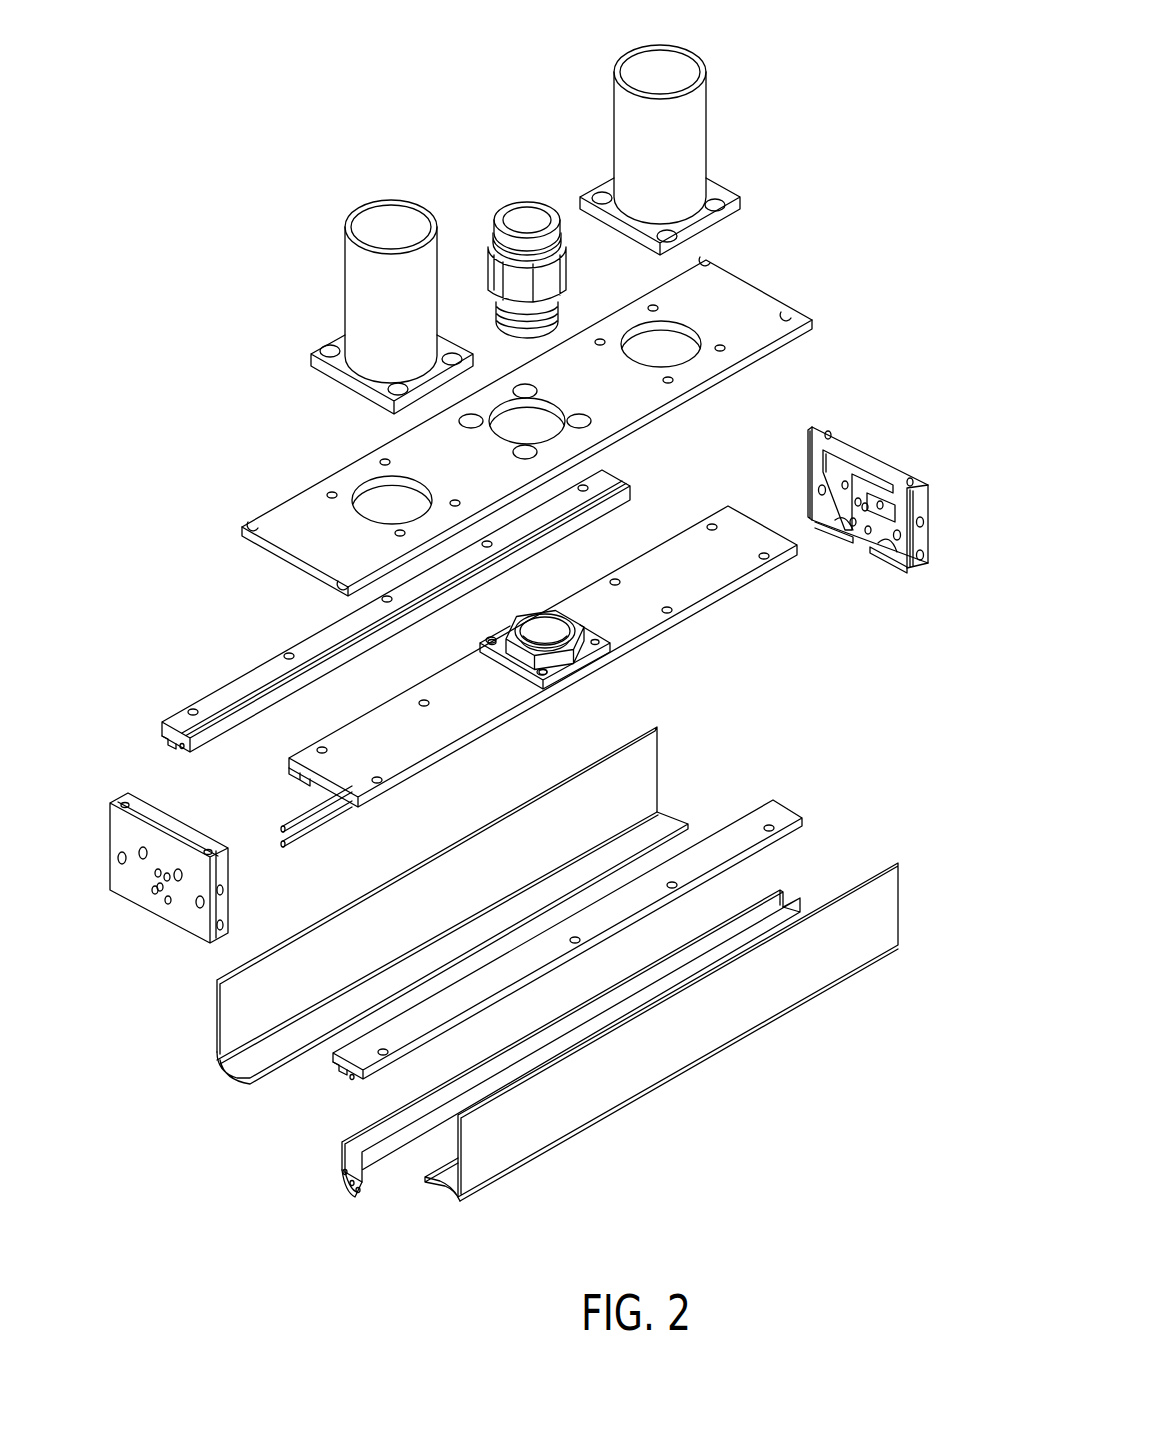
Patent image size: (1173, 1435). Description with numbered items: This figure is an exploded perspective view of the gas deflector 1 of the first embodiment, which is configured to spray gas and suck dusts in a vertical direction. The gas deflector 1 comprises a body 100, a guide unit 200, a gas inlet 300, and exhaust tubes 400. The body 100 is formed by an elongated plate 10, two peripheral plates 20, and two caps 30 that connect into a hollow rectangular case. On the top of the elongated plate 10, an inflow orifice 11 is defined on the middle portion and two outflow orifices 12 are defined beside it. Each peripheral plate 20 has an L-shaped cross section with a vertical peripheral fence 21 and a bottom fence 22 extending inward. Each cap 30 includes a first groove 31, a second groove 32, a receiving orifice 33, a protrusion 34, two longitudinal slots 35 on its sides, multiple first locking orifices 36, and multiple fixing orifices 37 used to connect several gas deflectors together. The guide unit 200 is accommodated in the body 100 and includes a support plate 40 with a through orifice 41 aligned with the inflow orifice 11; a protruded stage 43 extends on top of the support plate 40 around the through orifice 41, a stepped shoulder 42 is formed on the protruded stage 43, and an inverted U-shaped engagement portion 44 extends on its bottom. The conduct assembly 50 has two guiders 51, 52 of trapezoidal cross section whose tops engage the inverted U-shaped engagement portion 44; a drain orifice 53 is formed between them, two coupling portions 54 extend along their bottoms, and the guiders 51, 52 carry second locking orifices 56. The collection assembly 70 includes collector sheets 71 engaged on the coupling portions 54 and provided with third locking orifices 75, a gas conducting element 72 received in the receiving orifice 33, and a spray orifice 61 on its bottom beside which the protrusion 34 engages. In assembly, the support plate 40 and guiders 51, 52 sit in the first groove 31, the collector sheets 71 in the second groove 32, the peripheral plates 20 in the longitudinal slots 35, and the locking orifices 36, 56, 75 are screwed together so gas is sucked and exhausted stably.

The gas deflector 1 is at (231, 228).
The body 100 is at (244, 492).
The guide unit 200 is at (878, 790).
The gas inlet 300 is at (523, 198).
The exhaust tube 400 is at (405, 203).
The elongated plate 10 is at (769, 278).
The inflow orifice 11 is at (533, 425).
The outflow orifice 12 is at (652, 345).
The peripheral plate 20 is at (658, 782).
The vertical peripheral fence 21 is at (215, 1022).
The bottom fence 22 is at (240, 1078).
The cap 30 is at (937, 480).
The first groove 31 is at (833, 460).
The second groove 32 is at (828, 523).
The receiving orifice 33 is at (880, 496).
The protrusion 34 is at (878, 542).
The longitudinal slot 35 is at (808, 503).
The first locking orifice 36 is at (848, 482).
The fixing orifice 37 is at (921, 557).
The support plate 40 is at (333, 722).
The through orifice 41 is at (540, 625).
The stepped shoulder 42 is at (540, 668).
The protruded stage 43 is at (596, 650).
The inverted U-shaped engagement portion 44 is at (300, 782).
The conduct assembly 50 is at (804, 802).
The guider 51 is at (619, 478).
The guider 52 is at (728, 827).
The drain orifice 53 is at (330, 655).
The coupling portion 54 is at (188, 752).
The second locking orifice 56 is at (178, 742).
The spray orifice 61 is at (353, 1208).
The collection assembly 70 is at (802, 882).
The collector sheet 71 is at (337, 1175).
The gas conducting element 72 is at (280, 836).
The third locking orifice 75 is at (365, 1183).